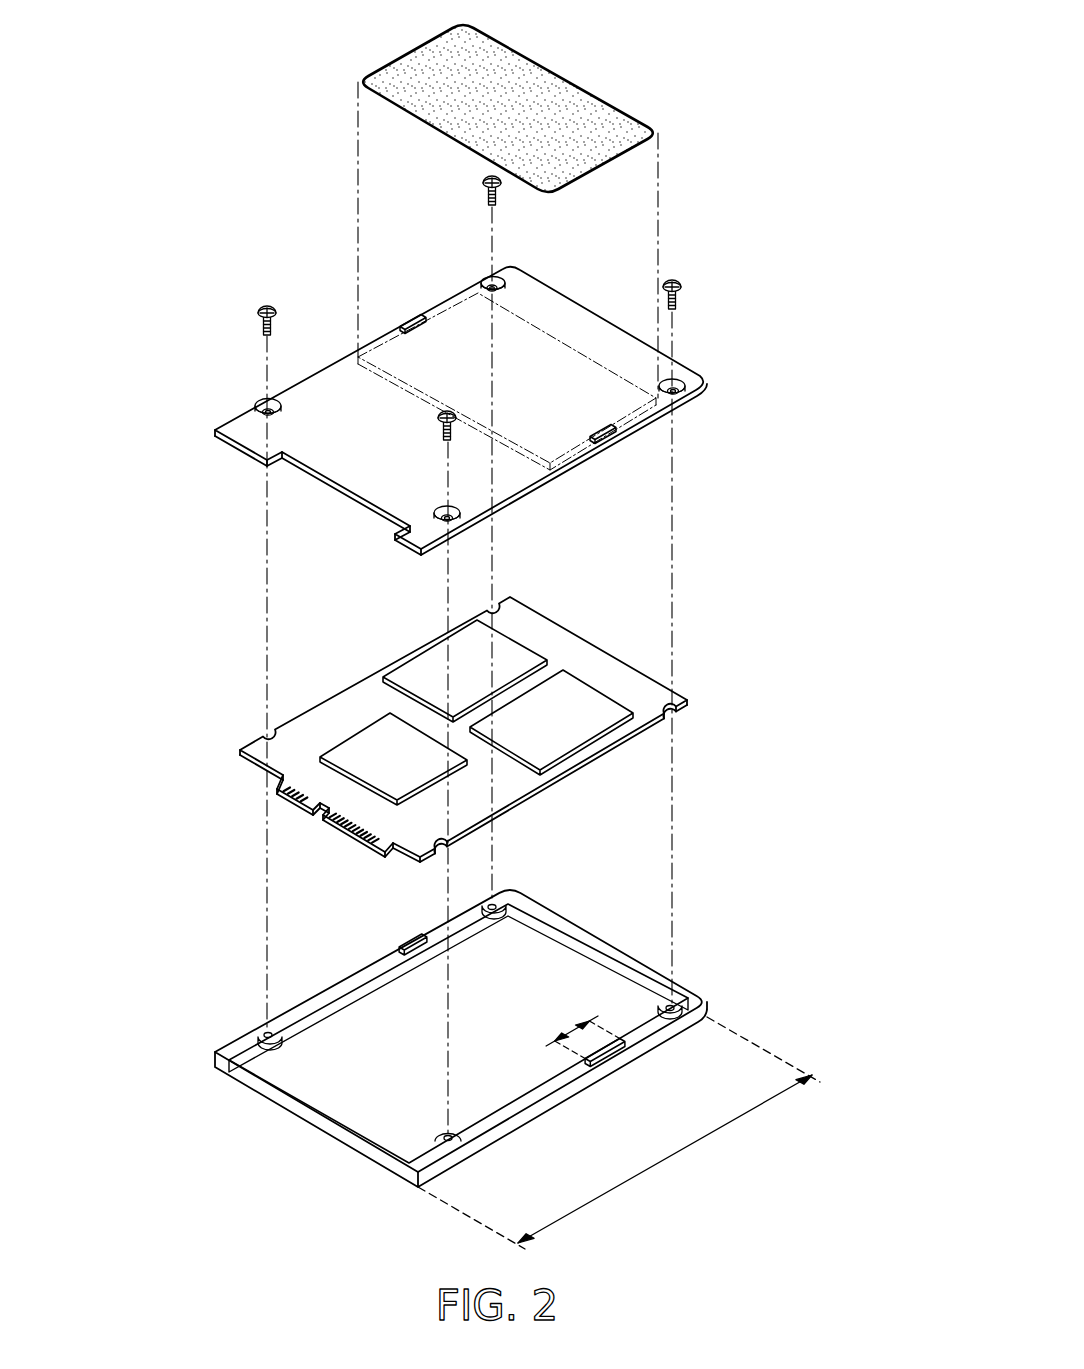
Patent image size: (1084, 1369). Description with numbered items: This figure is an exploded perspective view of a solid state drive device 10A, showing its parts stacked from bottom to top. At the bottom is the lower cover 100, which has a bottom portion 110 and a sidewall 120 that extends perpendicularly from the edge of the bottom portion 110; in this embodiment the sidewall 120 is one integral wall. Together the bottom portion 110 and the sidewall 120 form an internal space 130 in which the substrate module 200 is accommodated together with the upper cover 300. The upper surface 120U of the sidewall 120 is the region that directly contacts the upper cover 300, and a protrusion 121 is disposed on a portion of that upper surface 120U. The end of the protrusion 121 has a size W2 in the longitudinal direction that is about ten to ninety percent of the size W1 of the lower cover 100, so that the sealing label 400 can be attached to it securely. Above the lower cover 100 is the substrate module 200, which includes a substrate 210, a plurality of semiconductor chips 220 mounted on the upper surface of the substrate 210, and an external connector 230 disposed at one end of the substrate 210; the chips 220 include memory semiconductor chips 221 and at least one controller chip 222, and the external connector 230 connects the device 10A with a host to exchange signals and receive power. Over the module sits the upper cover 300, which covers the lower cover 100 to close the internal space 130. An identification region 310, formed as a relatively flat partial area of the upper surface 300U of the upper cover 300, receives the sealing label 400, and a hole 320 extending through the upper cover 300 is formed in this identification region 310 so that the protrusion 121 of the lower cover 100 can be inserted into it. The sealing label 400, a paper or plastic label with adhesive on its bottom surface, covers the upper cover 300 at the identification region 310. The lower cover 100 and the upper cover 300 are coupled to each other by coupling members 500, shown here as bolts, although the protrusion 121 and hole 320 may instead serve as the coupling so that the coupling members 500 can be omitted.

The solid state drive device 10A is at (280, 1183).
The lower cover 100 is at (444, 1033).
The bottom portion 110 is at (313, 1093).
The sidewall 120 is at (447, 1033).
The upper surface of the sidewall 120U is at (233, 1052).
The protrusion 121 is at (417, 938).
The internal space 130 is at (404, 1046).
The substrate module 200 is at (474, 713).
The substrate 210 is at (578, 657).
The semiconductor chips 220 is at (473, 685).
The memory semiconductor chips 221 is at (510, 723).
The controller chip 222 is at (373, 740).
The external connector 230 is at (283, 791).
The upper cover 300 is at (491, 402).
The upper surface of the upper cover 300U is at (342, 383).
The identification region 310 is at (563, 345).
The hole 320 is at (412, 318).
The sealing label 400 is at (640, 170).
The coupling member 500 is at (268, 302).
The size of the lower cover W1 is at (619, 1133).
The size of the end portion of the protrusion W2 is at (574, 1030).